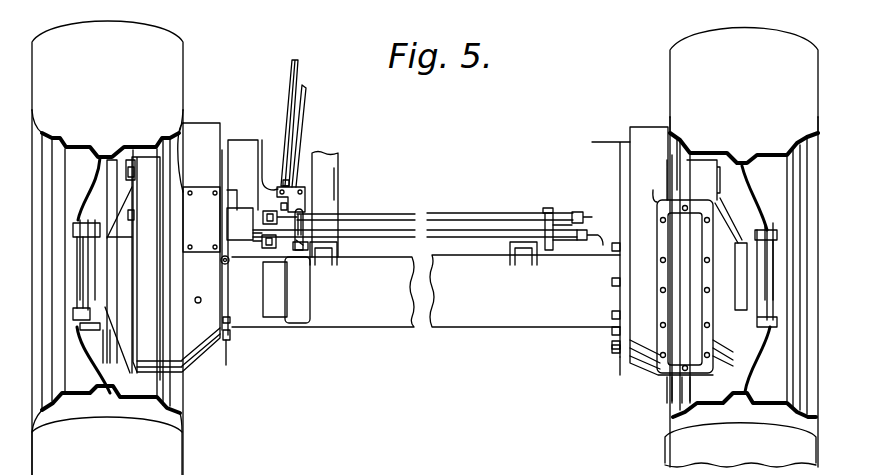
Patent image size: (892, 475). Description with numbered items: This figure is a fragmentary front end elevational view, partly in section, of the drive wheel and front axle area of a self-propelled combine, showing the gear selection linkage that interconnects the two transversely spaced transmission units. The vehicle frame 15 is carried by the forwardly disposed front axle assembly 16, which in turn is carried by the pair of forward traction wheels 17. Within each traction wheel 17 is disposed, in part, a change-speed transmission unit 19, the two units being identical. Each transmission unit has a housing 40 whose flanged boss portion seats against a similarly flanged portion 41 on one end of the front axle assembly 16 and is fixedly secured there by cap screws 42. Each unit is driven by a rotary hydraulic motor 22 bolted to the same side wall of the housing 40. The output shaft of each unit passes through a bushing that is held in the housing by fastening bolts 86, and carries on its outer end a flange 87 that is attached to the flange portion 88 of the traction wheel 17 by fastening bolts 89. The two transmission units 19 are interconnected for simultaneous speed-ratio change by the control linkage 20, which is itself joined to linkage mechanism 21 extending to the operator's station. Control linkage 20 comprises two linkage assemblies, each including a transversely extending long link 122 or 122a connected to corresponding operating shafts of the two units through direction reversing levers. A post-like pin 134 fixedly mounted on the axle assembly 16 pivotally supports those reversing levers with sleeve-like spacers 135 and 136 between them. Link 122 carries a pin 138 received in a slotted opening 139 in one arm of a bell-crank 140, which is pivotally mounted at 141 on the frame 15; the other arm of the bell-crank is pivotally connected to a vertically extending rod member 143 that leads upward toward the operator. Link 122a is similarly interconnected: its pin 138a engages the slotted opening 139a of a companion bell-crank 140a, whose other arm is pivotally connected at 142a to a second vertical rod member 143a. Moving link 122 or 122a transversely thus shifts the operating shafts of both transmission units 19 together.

The frame 15 is at (337, 167).
The front axle assembly 16 is at (398, 331).
The traction wheel 17 is at (163, 457).
The change-speed transmission unit assembly 19 is at (203, 120).
The control linkage 20 is at (448, 212).
The linkage mechanism 21 is at (305, 113).
The hydraulic motor 22 is at (236, 142).
The housing 40 is at (230, 333).
The flanged portion 41 is at (226, 363).
The cap screws 42 is at (230, 348).
The fastening bolts 86 is at (108, 322).
The flange 87 is at (112, 397).
The flange portion 88 is at (130, 292).
The fastening bolts 89 is at (72, 314).
The long link 122 is at (468, 239).
The long link 122a is at (466, 212).
The pin 134 is at (553, 208).
The spacer 135 is at (553, 250).
The spacer 136 is at (556, 247).
The pin 138 is at (294, 238).
The pin 138a is at (304, 236).
The slotted opening 139 is at (303, 244).
The slotted opening 139a is at (307, 216).
The bell-crank 140 is at (310, 232).
The bell-crank 140a is at (284, 208).
The pivot 141 is at (302, 156).
The pivot connection 142a is at (279, 165).
The rod member 143 is at (290, 68).
The rod member 143a is at (302, 134).